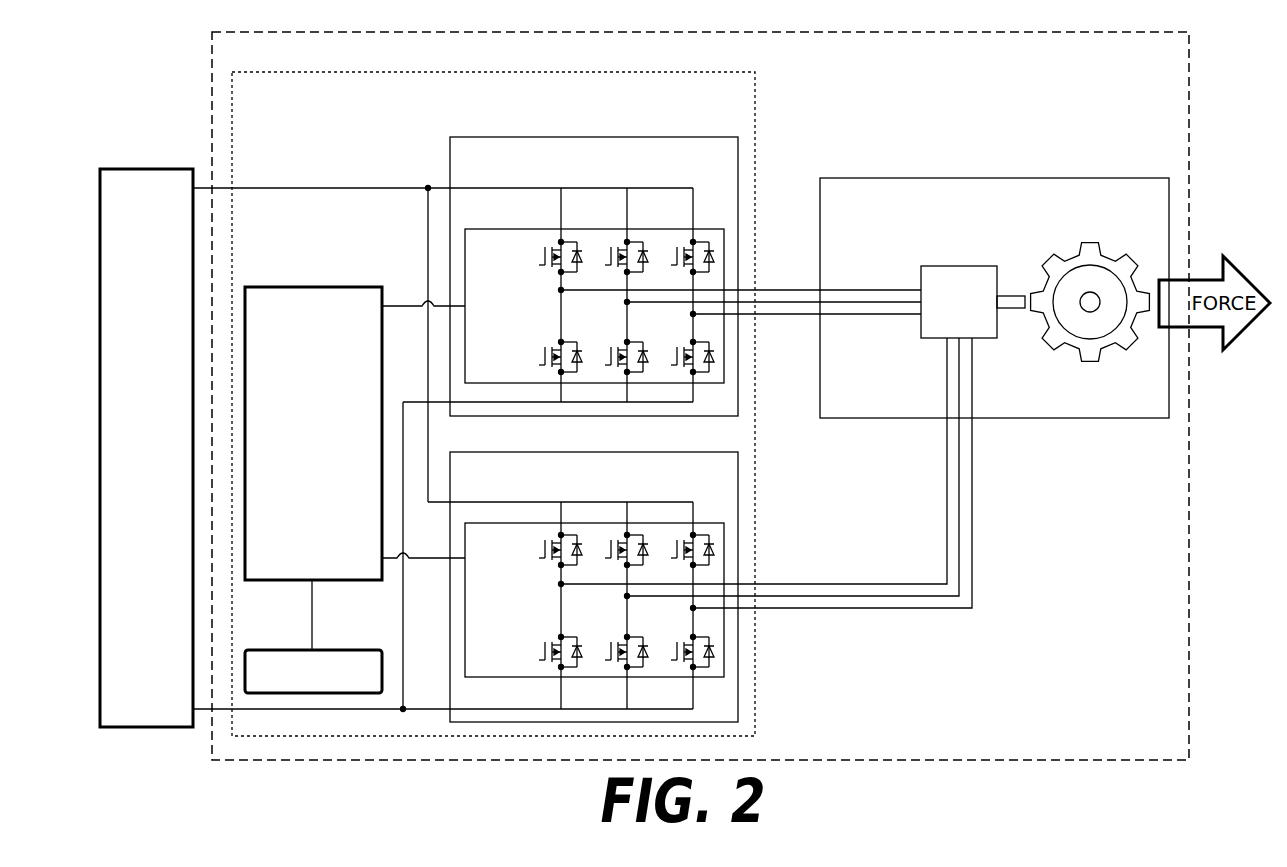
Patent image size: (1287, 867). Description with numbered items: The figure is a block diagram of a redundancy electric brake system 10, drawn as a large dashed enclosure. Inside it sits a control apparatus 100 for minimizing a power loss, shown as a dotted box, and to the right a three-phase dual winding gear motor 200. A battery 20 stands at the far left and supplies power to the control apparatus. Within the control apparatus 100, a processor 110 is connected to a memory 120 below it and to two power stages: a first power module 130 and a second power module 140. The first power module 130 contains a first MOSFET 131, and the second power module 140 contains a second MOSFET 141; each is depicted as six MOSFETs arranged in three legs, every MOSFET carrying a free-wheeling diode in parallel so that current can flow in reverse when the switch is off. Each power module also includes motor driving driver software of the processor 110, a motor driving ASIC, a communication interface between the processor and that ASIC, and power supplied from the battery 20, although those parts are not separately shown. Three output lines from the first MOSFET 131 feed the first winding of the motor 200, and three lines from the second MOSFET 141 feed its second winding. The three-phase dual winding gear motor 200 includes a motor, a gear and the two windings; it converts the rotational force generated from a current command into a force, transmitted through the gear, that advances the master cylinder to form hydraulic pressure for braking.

The redundancy electric brake system 10 is at (212, 58).
The battery 20 is at (143, 169).
The control apparatus for minimizing a power loss 100 is at (755, 115).
The processor 110 is at (283, 287).
The memory 120 is at (282, 650).
The first power module 130 is at (633, 276).
The first MOSFET 131 is at (726, 252).
The second power module 140 is at (633, 587).
The second MOSFET 141 is at (726, 658).
The three-phase dual winding gear motor 200 is at (1025, 178).